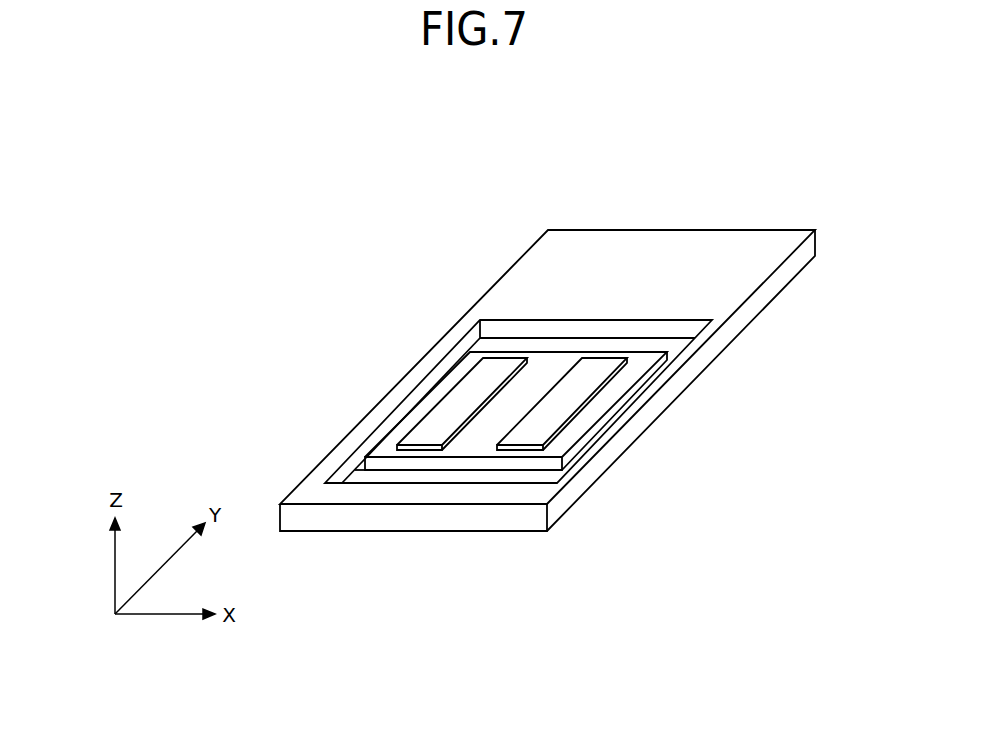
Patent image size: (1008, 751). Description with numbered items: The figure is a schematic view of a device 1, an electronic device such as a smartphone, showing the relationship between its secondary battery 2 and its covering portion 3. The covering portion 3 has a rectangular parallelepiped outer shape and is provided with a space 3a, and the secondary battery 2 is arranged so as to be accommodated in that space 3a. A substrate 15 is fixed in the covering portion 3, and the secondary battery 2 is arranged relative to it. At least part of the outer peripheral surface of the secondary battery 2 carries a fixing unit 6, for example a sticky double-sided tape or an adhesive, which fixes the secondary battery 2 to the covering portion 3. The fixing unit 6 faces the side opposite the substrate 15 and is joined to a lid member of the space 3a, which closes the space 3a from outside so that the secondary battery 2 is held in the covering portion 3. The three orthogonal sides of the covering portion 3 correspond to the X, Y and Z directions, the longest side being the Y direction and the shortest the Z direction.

The device 1 is at (784, 150).
The secondary battery 2 is at (388, 448).
The covering portion 3 is at (733, 242).
The space 3a is at (508, 328).
The fixing unit 6 is at (443, 407).
The substrate 15 is at (357, 467).